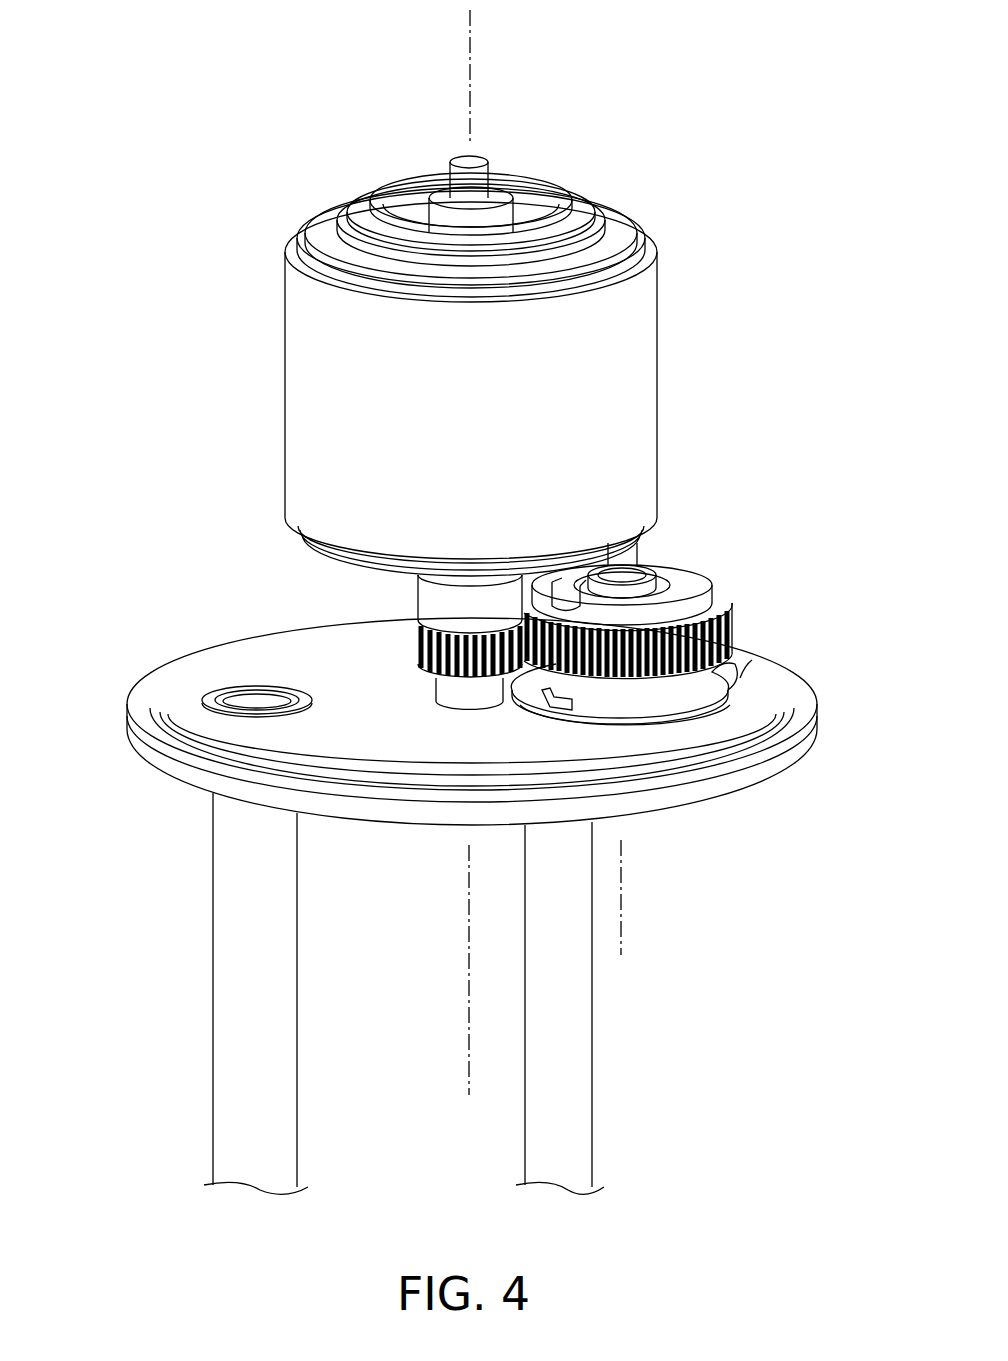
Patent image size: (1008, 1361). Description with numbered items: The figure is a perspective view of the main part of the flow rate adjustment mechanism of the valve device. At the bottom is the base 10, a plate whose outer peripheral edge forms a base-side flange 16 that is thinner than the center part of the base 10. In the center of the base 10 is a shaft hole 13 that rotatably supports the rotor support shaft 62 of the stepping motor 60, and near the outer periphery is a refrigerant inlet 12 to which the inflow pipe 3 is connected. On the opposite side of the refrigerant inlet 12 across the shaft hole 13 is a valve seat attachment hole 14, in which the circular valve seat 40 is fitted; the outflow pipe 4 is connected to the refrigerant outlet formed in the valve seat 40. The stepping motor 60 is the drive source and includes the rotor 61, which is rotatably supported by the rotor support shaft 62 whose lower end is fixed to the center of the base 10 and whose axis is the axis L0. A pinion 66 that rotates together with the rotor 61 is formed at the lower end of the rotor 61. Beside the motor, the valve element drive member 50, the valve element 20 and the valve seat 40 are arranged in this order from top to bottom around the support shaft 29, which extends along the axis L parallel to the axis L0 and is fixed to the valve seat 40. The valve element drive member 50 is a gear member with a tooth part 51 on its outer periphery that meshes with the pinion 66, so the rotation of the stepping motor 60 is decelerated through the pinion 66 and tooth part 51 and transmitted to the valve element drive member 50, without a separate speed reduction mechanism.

The inflow pipe 3 is at (585, 1123).
The outflow pipe 4 is at (210, 845).
The base 10 is at (426, 673).
The refrigerant inlet 12 is at (210, 698).
The shaft hole 13 is at (447, 698).
The valve seat attachment hole 14 is at (707, 718).
The base-side flange 16 is at (145, 708).
The valve element 20 is at (724, 668).
The support shaft 29 is at (640, 557).
The valve seat 40 is at (731, 684).
The valve element drive member 50 is at (679, 580).
The tooth part 51 is at (718, 583).
The stepping motor 60 is at (536, 374).
The rotor 61 is at (658, 282).
The rotor support shaft 62 is at (485, 178).
The pinion 66 is at (417, 642).
The axis L0 is at (470, 42).
The axis L is at (622, 917).